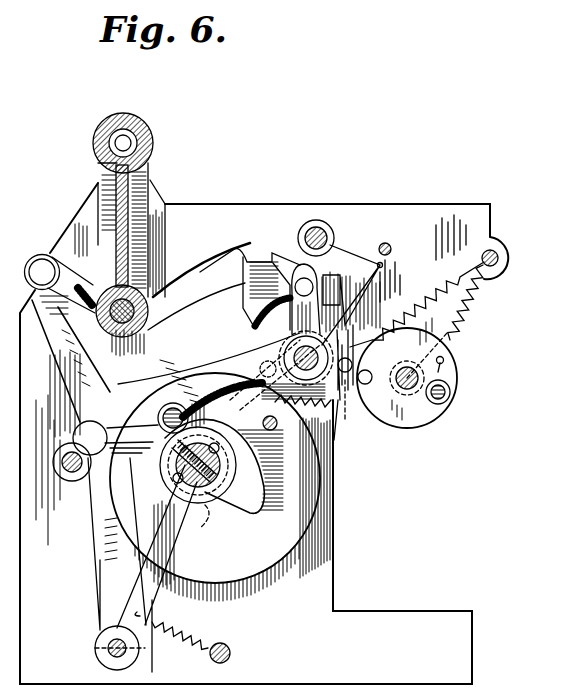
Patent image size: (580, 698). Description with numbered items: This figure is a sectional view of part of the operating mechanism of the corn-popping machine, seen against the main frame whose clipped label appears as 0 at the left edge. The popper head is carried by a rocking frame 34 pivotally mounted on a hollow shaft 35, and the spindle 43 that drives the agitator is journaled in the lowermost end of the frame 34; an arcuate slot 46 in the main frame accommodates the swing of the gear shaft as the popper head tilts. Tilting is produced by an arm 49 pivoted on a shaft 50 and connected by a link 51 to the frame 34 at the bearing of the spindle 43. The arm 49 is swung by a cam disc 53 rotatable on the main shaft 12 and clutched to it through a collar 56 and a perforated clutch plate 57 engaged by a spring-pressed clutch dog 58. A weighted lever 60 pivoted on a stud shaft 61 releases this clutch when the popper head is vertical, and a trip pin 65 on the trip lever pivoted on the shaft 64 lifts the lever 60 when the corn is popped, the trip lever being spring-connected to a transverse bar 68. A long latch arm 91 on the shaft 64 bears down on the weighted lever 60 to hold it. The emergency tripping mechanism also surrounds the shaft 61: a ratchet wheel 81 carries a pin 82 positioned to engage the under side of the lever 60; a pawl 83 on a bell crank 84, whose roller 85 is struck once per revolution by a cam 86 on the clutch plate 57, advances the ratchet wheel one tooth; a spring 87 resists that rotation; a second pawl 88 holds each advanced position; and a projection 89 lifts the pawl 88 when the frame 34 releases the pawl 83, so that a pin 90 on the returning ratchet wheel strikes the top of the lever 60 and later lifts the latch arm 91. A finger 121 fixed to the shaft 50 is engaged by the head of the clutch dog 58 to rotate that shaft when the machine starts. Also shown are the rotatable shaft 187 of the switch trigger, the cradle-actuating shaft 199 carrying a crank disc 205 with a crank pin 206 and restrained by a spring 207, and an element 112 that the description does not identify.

The frame plate 0 is at (25, 586).
The main shaft 12 is at (252, 460).
The frame 34 is at (103, 186).
The hollow shaft 35 is at (136, 138).
The spindle 43 is at (149, 311).
The arcuate slot 46 is at (199, 286).
The arm 49 is at (60, 366).
The shaft 50 is at (106, 652).
The link 51 is at (72, 286).
The cam disc 53 is at (98, 507).
The collar 56 is at (172, 478).
The clutch plate 57 is at (172, 462).
The clutch dog 58 is at (204, 530).
The weighted lever 60 is at (141, 433).
The stud shaft 61 is at (324, 346).
The shaft 64 is at (328, 235).
The trip pin 65 is at (276, 428).
The transverse bar 68 is at (229, 648).
The ratchet wheel 81 is at (352, 387).
The pin 82 is at (347, 410).
The pawl 83 is at (272, 266).
The bell crank 84 is at (290, 306).
The roller 85 is at (160, 422).
The cam 86 is at (243, 525).
The spring 87 is at (433, 303).
The second pawl 88 is at (344, 253).
The projection 89 is at (384, 266).
The pin 90 is at (258, 365).
The latch arm 91 is at (240, 343).
The stud 112 is at (66, 480).
The finger 121 is at (148, 530).
The rotatable shaft 187 is at (390, 248).
The shaft 199 is at (401, 390).
The crank disc 205 is at (433, 418).
The crank pin 206 is at (451, 389).
The spring 207 is at (464, 316).